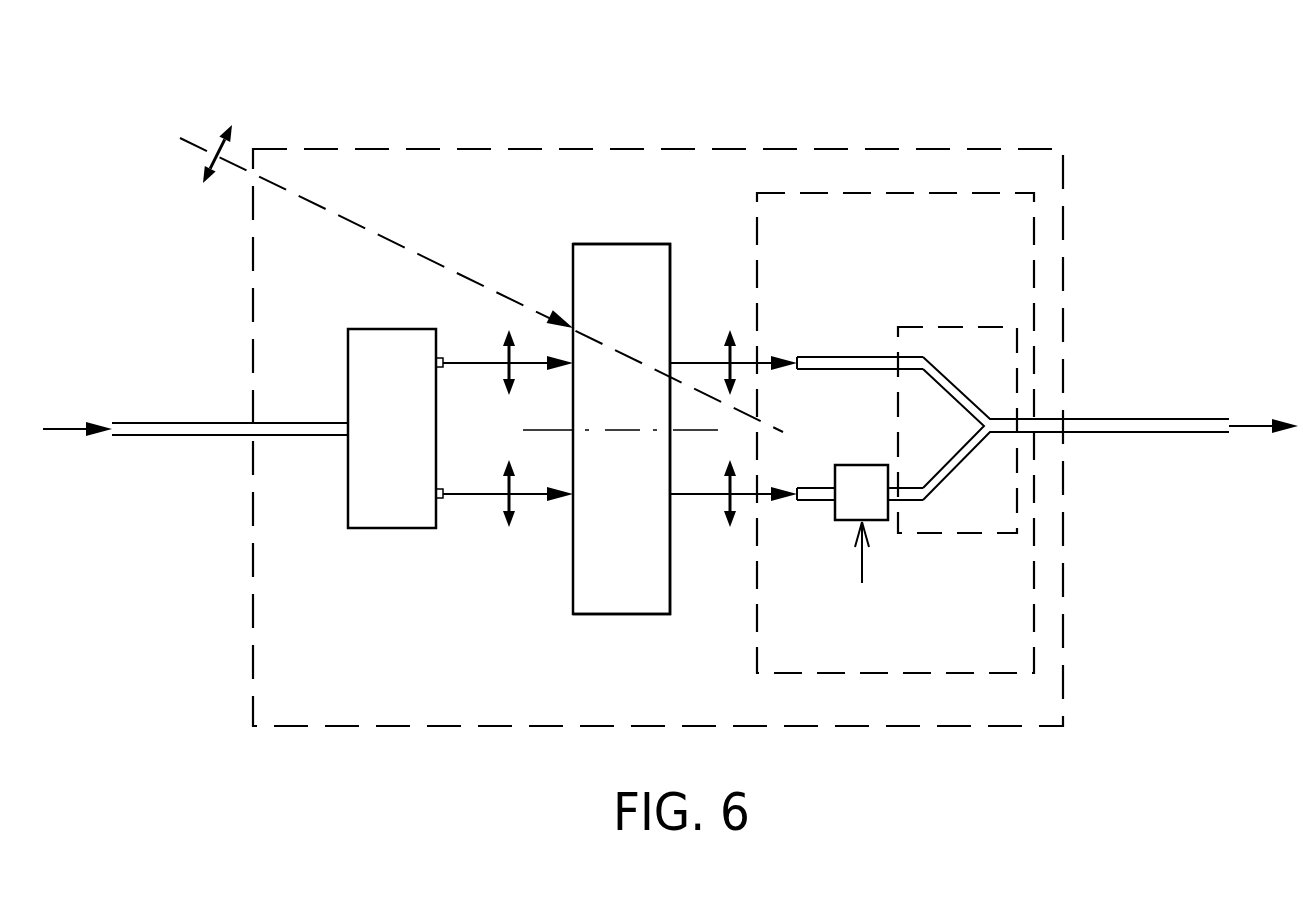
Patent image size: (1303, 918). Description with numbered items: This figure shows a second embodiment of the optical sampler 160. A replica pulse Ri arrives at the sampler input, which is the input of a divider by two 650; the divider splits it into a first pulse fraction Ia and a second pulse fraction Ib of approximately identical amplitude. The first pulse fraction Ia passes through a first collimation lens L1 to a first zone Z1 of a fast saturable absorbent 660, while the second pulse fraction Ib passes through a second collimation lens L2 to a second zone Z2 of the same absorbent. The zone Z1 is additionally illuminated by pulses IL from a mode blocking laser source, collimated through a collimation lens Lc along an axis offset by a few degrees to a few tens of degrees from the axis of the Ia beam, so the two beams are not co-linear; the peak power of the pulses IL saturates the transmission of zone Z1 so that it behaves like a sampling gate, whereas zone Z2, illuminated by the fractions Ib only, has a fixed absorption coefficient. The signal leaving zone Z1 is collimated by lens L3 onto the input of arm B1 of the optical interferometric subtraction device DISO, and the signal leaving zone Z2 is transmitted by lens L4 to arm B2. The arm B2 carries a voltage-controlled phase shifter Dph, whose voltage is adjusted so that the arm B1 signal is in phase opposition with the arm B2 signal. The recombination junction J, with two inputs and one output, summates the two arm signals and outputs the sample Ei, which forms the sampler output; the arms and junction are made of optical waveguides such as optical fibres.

The optical sampler 160 is at (982, 720).
The divider by two 650 is at (380, 522).
The fast saturable absorbent 660 is at (627, 606).
The optical interferometric subtraction device DISO is at (768, 626).
The recombination junction J is at (937, 528).
The replica pulse Ri is at (73, 428).
The sample Ei is at (1253, 425).
The first pulse fraction Ia is at (470, 362).
The second pulse fraction Ib is at (470, 497).
The first collimation lens L1 is at (508, 372).
The second collimation lens L2 is at (515, 500).
The collimation lens L3 is at (727, 355).
The collimation lens L4 is at (725, 505).
The first zone of the saturable absorbent Z1 is at (621, 337).
The second zone of the saturable absorbent Z2 is at (621, 522).
The first input arm B1 is at (840, 363).
The second input arm B2 is at (822, 495).
The phase shifter Dph is at (847, 465).
The pulses IL is at (195, 146).
The collimation lens Lc is at (202, 165).